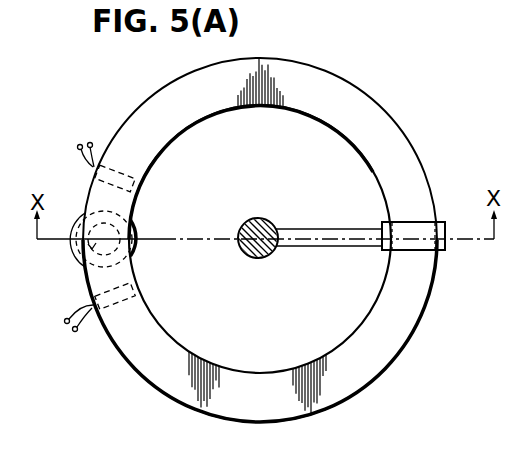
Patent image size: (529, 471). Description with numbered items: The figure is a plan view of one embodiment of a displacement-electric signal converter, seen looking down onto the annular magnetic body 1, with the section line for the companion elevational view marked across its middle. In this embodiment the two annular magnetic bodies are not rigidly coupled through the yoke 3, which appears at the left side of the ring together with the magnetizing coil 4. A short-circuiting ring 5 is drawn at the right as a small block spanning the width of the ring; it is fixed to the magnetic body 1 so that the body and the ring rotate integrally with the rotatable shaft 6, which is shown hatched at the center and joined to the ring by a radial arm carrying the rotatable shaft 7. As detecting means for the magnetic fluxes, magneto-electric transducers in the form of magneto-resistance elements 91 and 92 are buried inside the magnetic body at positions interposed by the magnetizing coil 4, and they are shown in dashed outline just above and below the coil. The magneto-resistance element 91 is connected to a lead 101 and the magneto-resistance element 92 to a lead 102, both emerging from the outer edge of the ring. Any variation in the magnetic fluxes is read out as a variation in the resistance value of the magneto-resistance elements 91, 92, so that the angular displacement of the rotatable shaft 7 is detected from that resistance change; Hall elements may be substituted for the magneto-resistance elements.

The annular magnetic body 1 is at (420, 157).
The yoke 3 is at (74, 262).
The magnetizing coil 4 is at (78, 217).
The short-circuiting ring 5 is at (445, 222).
The rotatable shaft 6 is at (265, 220).
The rotatable shaft 7 is at (323, 229).
The magneto-resistance element 91 is at (133, 185).
The magneto-resistance element 92 is at (133, 287).
The lead 101 is at (85, 140).
The lead 102 is at (72, 328).